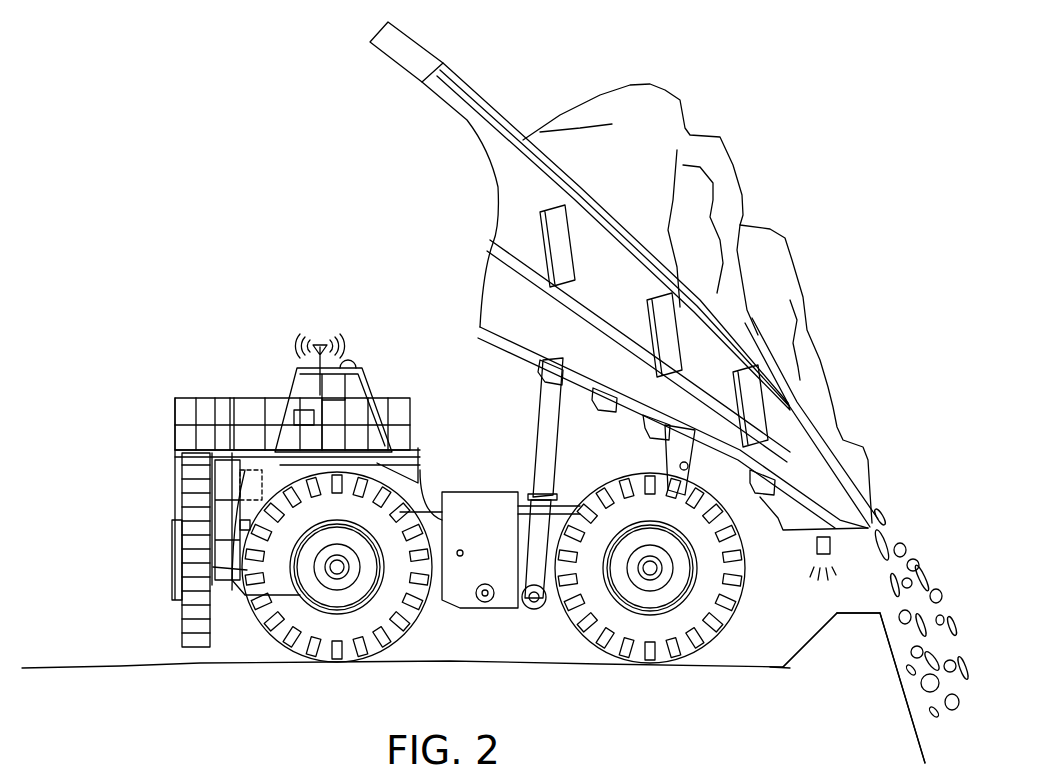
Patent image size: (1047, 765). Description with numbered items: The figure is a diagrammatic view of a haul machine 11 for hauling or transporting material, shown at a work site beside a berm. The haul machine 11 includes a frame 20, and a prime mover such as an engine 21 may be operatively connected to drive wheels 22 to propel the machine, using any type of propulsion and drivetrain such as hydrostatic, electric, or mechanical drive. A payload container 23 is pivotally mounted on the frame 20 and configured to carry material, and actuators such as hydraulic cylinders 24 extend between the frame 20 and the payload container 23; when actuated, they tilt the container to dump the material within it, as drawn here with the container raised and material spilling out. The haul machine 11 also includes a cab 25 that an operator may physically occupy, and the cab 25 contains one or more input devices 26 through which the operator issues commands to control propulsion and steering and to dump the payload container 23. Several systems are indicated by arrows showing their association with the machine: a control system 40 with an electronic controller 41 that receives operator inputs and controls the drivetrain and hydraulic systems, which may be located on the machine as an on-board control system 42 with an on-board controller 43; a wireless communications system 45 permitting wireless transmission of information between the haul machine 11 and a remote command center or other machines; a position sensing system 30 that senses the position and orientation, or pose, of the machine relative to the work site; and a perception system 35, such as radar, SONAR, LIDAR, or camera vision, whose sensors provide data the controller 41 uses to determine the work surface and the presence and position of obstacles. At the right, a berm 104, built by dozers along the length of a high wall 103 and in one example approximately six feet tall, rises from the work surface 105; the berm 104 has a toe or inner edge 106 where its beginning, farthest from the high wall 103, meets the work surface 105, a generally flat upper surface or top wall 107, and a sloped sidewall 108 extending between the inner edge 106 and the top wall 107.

The haul machine 11 is at (456, 367).
The frame 20 is at (418, 500).
The engine 21 is at (224, 388).
The drive wheels 22 is at (318, 655).
The payload container 23 is at (490, 100).
The hydraulic cylinders 24 is at (543, 430).
The cab 25 is at (300, 368).
The input devices 26 is at (300, 418).
The position sensing system 30 is at (126, 419).
The perception system 35 is at (323, 298).
The control system 40 is at (173, 363).
The controller 41 is at (146, 373).
The on-board control system 42 is at (133, 391).
The on-board controller 43 is at (240, 470).
The wireless communications system 45 is at (284, 260).
The high wall 103 is at (920, 737).
The berm 104 is at (870, 655).
The work surface 105 is at (136, 663).
The inner edge 106 is at (787, 673).
The top wall 107 is at (855, 612).
The sloped sidewall 108 is at (802, 642).